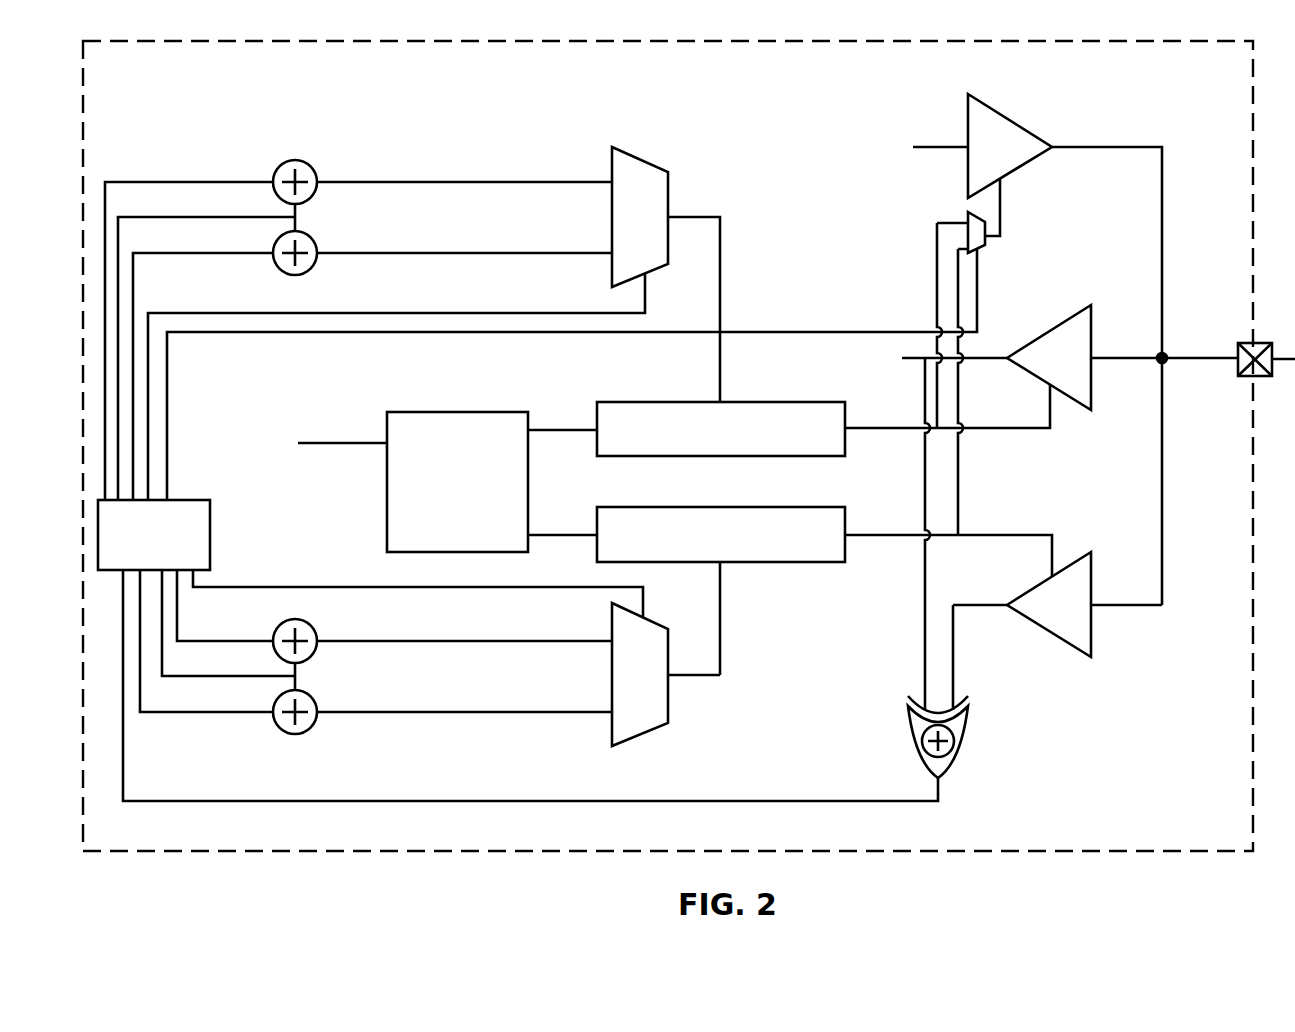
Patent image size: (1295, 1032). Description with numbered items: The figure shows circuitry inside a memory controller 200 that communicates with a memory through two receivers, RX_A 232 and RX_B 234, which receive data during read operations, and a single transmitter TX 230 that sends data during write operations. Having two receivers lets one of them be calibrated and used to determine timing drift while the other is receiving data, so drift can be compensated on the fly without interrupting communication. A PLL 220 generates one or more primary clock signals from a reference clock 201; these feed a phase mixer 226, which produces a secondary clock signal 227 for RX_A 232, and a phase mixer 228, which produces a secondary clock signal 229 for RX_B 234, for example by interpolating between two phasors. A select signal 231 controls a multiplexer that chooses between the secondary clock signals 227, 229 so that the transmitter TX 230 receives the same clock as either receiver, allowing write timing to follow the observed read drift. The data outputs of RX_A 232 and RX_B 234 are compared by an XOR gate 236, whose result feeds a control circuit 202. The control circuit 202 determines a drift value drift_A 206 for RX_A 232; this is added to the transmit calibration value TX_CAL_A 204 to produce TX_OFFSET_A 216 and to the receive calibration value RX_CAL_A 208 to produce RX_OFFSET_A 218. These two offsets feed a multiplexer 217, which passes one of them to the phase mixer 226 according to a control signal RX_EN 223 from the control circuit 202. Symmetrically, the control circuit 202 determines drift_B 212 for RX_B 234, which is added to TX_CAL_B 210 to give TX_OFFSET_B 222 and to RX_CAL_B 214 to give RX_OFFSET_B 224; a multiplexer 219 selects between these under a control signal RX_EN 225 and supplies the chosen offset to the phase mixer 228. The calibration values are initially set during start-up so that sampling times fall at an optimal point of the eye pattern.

The memory controller 200 is at (668, 446).
The reference clock 201 is at (310, 432).
The control circuit 202 is at (154, 535).
The transmit calibration value TX_CAL_A 204 is at (211, 330).
The drift value drift_A 206 is at (206, 347).
The receive calibration value RX_CAL_A 208 is at (225, 365).
The transmit calibration value TX_CAL_B 210 is at (247, 616).
The drift value drift_B 212 is at (228, 630).
The receive calibration value RX_CAL_B 214 is at (228, 652).
The TX_OFFSET_A 216 is at (464, 171).
The multiplexer 217 is at (656, 274).
The RX_OFFSET_A 218 is at (464, 242).
The multiplexer 219 is at (656, 674).
The PLL 220 is at (492, 482).
The TX_OFFSET_B 222 is at (464, 629).
The control signal RX_EN 223 is at (396, 386).
The RX_OFFSET_B 224 is at (464, 701).
The control signal RX_EN 225 is at (418, 591).
The phase mixer 226 is at (721, 429).
The secondary clock signal 227 is at (947, 406).
The phase mixer 228 is at (721, 591).
The secondary clock signal 229 is at (948, 546).
The transmitter 230 is at (1037, 349).
The select signal 231 is at (572, 374).
The receiver RX_A 232 is at (1098, 357).
The receiver RX_B 234 is at (1057, 604).
The XOR gate 236 is at (971, 703).